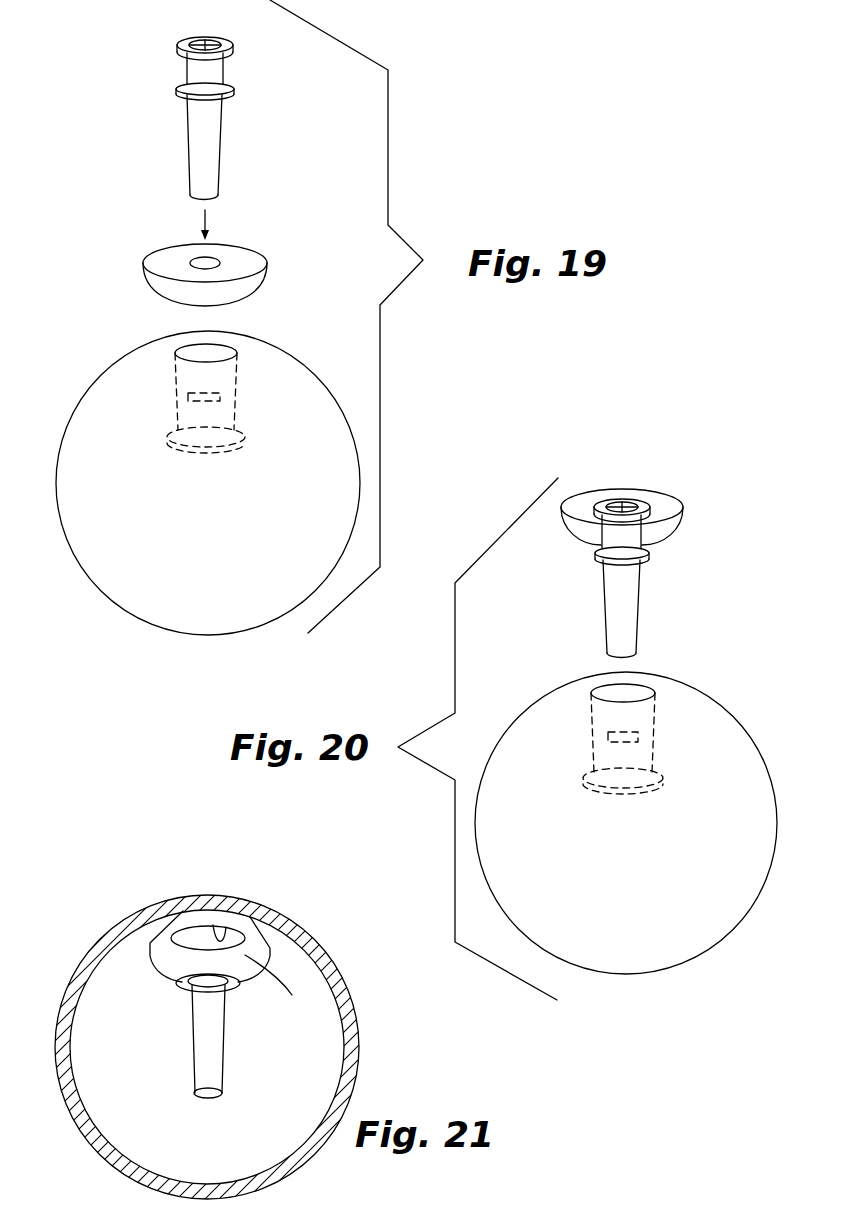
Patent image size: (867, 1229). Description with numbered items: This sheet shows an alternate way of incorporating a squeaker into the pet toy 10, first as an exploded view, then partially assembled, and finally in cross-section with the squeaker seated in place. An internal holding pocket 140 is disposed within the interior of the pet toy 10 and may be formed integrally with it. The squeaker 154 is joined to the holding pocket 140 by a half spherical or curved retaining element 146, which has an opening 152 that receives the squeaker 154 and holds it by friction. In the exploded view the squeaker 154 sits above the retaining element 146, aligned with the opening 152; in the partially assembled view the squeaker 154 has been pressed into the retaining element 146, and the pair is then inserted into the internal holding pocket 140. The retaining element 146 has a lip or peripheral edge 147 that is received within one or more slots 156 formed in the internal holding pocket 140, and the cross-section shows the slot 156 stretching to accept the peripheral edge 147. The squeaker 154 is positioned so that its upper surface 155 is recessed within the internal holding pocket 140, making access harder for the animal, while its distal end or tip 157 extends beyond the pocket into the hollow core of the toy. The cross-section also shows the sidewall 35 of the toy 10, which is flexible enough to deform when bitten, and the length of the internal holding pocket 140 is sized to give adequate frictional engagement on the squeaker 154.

In FIG. 19, the pet toy 10 is at (320, 353).
In FIG. 20, the pet toy 10 is at (744, 696).
In FIG. 21, the pet toy 10 is at (285, 871).
In FIG. 21, the sidewall 35 is at (66, 985).
In FIG. 19, the internal holding pocket 140 is at (200, 466).
In FIG. 20, the internal holding pocket 140 is at (574, 790).
In FIG. 21, the internal holding pocket 140 is at (150, 980).
In FIG. 19, the retaining element 146 is at (214, 254).
In FIG. 20, the retaining element 146 is at (656, 487).
In FIG. 21, the retaining element 146 is at (210, 898).
In FIG. 19, the peripheral edge 147 is at (265, 259).
In FIG. 20, the peripheral edge 147 is at (678, 502).
In FIG. 21, the peripheral edge 147 is at (222, 943).
In FIG. 19, the opening 152 is at (210, 262).
In FIG. 19, the squeaker 154 is at (210, 135).
In FIG. 20, the squeaker 154 is at (627, 625).
In FIG. 21, the squeaker 154 is at (213, 1050).
In FIG. 19, the upper surface 155 is at (183, 43).
In FIG. 20, the upper surface 155 is at (601, 497).
In FIG. 19, the slot 156 is at (215, 401).
In FIG. 20, the slot 156 is at (630, 745).
In FIG. 21, the slot 156 is at (282, 989).
In FIG. 19, the distal end 157 is at (210, 197).
In FIG. 20, the distal end 157 is at (612, 655).
In FIG. 21, the distal end 157 is at (222, 1096).